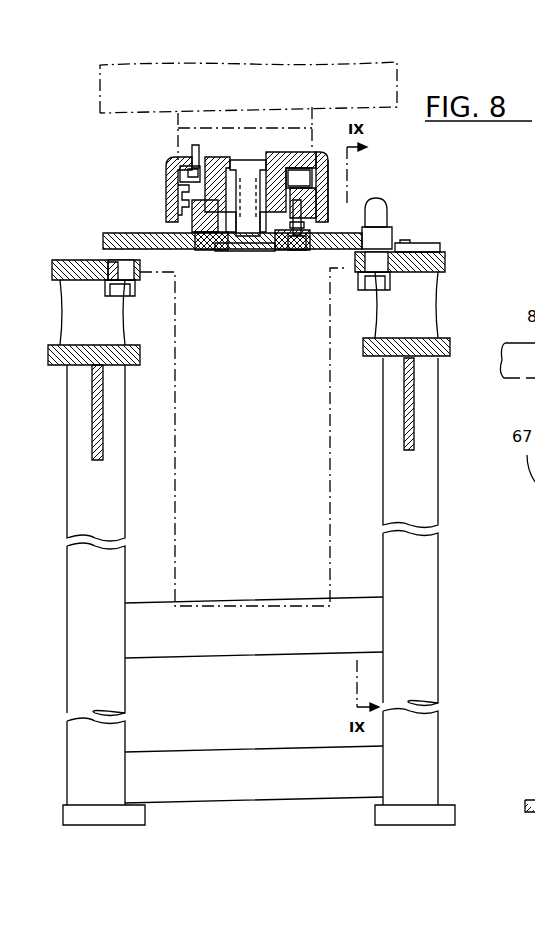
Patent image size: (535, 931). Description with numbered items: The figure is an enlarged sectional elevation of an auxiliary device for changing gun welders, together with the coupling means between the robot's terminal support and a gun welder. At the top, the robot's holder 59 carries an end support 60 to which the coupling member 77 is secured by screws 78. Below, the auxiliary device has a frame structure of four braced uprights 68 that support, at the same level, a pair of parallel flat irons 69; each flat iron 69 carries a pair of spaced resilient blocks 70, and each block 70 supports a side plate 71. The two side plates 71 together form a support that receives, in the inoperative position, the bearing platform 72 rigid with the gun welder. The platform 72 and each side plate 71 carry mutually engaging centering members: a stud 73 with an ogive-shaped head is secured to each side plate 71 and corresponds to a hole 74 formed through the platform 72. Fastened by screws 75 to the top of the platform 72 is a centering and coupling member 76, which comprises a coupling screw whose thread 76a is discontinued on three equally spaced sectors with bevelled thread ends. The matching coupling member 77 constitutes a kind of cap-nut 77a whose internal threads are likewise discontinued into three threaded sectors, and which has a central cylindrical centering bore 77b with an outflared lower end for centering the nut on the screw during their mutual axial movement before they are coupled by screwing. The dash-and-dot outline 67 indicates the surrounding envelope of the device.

The holder 59 is at (100, 80).
The end support 60 is at (160, 122).
The container outline 67 is at (164, 474).
The braced uprights 68 is at (74, 533).
The flat irons 69 is at (132, 365).
The resilient blocks 70 is at (108, 319).
The side plate 71 is at (70, 260).
The bearing platform 72 is at (357, 228).
The stud 73 is at (388, 212).
The hole 74 is at (396, 247).
The screws 75 is at (296, 252).
The centering and coupling member 76 is at (206, 250).
The thread 76a is at (323, 165).
The coupling member 77 is at (152, 160).
The cap-nut 77a is at (318, 200).
The central cylindrical centering bore 77b is at (275, 158).
The screws 78 is at (203, 155).